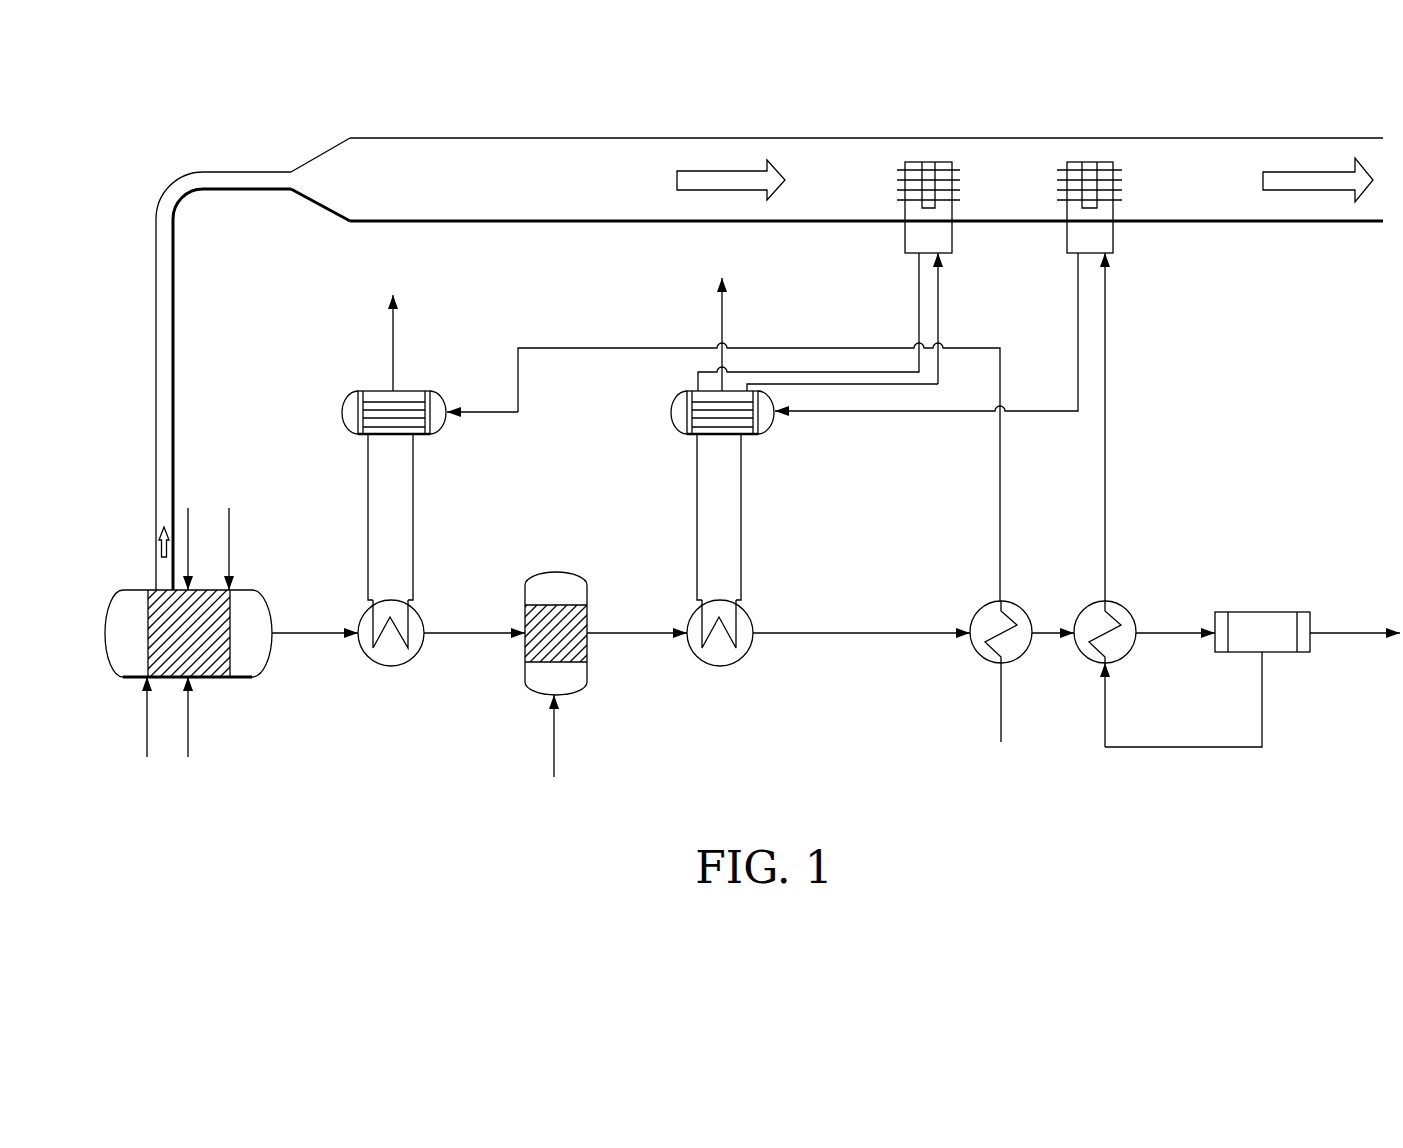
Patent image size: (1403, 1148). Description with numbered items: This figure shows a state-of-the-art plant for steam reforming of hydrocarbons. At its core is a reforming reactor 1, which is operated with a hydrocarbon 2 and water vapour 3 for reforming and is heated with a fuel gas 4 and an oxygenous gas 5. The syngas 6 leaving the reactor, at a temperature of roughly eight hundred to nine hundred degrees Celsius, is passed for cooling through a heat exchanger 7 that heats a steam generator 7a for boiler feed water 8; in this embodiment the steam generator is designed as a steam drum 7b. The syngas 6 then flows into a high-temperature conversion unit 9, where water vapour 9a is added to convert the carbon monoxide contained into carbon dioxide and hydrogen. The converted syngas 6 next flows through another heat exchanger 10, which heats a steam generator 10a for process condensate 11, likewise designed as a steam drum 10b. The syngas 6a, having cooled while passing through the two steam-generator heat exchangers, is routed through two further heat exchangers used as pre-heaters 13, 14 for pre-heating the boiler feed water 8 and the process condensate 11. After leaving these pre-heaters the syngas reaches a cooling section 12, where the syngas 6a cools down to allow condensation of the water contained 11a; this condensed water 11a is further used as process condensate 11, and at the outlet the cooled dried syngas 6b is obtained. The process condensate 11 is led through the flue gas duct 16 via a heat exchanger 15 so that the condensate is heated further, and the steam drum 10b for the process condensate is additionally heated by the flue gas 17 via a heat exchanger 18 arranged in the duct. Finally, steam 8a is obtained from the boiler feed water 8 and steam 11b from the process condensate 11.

The reforming reactor 1 is at (253, 678).
The hydrocarbon 2 is at (147, 745).
The water vapour 3 is at (188, 745).
The fuel gas 4 is at (190, 520).
The oxygenous gas 5 is at (230, 520).
The syngas 6 is at (298, 632).
The cooled syngas 6a is at (846, 632).
The cooled dried syngas 6b is at (1343, 630).
The heat exchanger 7 is at (418, 608).
The steam generator 7a is at (432, 437).
The steam drum 7b is at (362, 435).
The boiler feed water 8 is at (497, 410).
The steam 8a is at (385, 348).
The high-temperature conversion unit 9 is at (587, 592).
The water vapour 9a is at (554, 742).
The heat exchanger 10 is at (750, 612).
The steam generator 10a is at (760, 437).
The steam drum 10b is at (692, 436).
The process condensate 11 is at (895, 413).
The condensed water 11a is at (1262, 693).
The steam 11b is at (722, 335).
The cooling section 12 is at (1264, 612).
The pre-heater 13 is at (1022, 610).
The pre-heater 14 is at (1127, 610).
The heat exchanger 15 is at (1113, 237).
The flue gas duct 16 is at (838, 138).
The flue gas 17 is at (688, 190).
The heat exchanger 18 is at (955, 237).